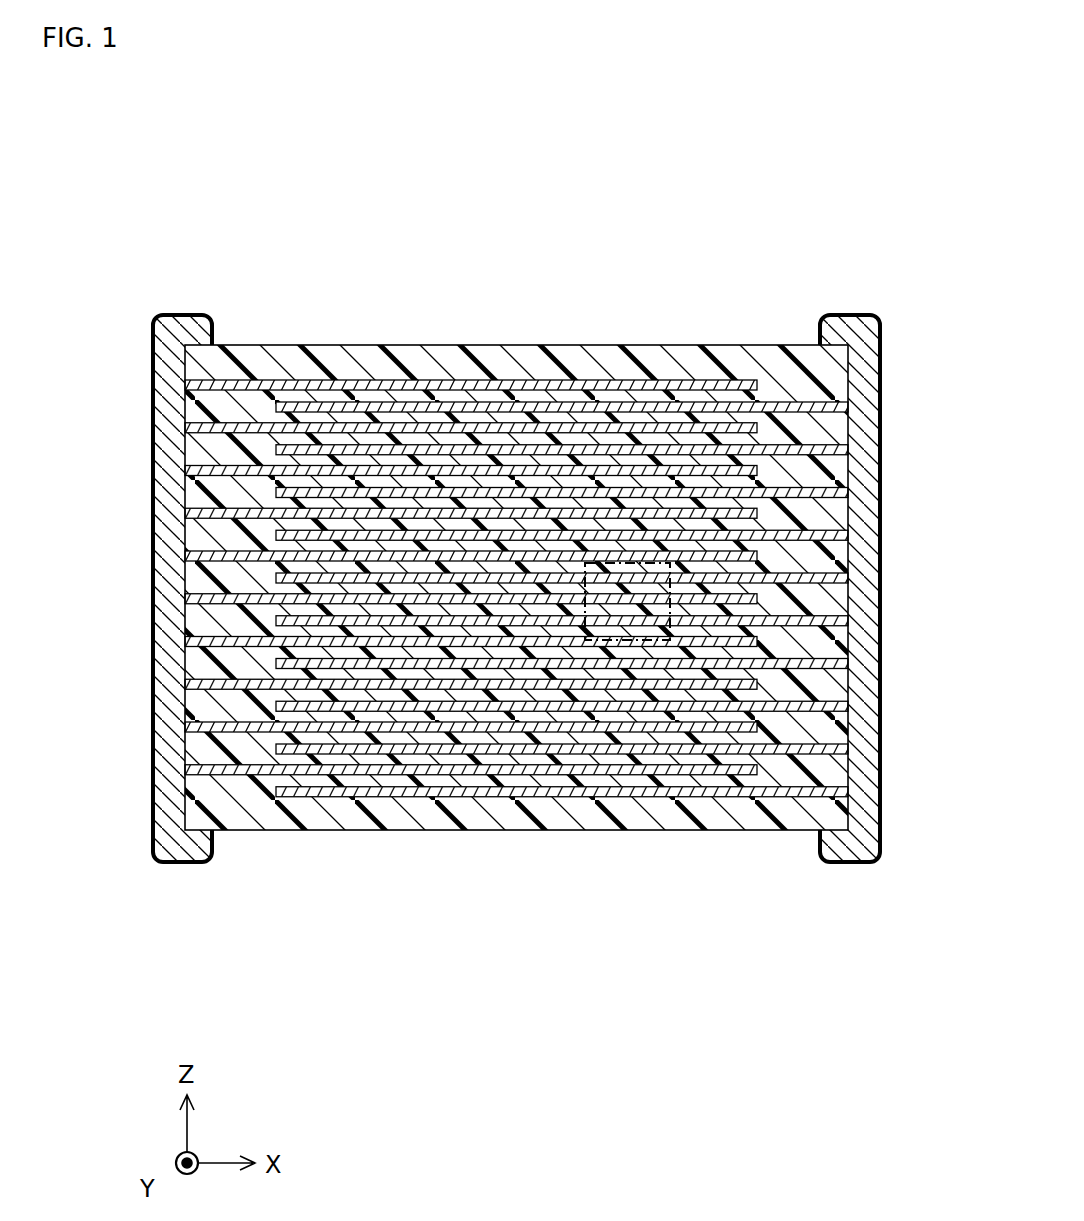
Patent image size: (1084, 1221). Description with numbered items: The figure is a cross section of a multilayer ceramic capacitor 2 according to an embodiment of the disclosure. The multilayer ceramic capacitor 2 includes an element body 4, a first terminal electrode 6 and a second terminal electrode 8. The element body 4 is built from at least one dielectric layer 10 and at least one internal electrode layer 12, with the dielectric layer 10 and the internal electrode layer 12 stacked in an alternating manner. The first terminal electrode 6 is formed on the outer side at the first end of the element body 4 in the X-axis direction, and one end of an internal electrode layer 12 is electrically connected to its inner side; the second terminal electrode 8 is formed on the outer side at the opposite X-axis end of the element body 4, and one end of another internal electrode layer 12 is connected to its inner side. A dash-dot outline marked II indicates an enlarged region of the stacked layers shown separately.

The multilayer ceramic capacitor 2 is at (516, 611).
The element body 4 is at (516, 593).
The first terminal electrode 6 is at (192, 846).
The second terminal electrode 8 is at (848, 316).
The dielectric layer 10 is at (402, 385).
The internal electrode layer 12 is at (605, 378).
The enlarged region shown in FIG. 2 II is at (675, 572).